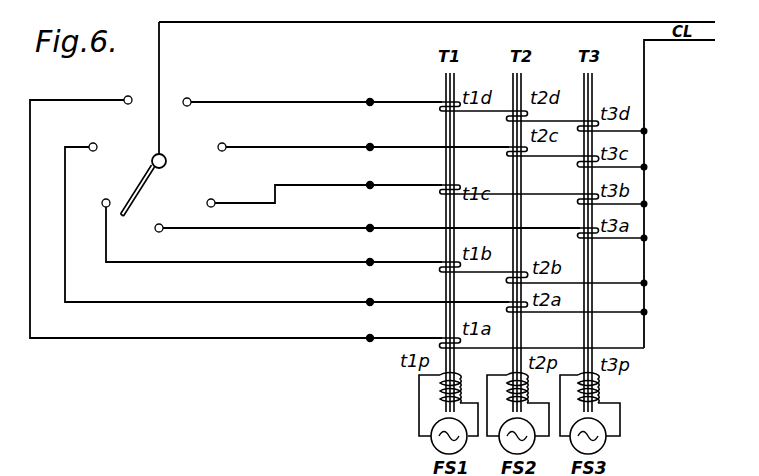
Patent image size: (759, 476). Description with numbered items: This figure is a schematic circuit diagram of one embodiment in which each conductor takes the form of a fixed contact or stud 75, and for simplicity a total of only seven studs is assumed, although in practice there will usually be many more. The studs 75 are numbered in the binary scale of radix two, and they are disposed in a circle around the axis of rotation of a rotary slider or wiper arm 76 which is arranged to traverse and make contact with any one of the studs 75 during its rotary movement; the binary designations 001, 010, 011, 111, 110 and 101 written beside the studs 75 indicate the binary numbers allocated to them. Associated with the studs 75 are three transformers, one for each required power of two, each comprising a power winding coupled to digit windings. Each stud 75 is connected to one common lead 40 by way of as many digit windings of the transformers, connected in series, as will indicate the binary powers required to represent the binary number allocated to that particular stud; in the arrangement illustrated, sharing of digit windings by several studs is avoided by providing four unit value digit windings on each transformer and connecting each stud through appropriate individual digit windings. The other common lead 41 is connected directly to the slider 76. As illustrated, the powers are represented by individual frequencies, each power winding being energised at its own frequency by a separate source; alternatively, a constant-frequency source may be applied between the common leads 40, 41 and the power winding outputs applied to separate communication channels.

The fixed contact or stud 75 is at (233, 177).
The rotary slider or wiper arm 76 is at (212, 167).
The switch position 001 conductor 001 is at (236, 221).
The switch position 010 conductor 010 is at (287, 226).
The switch position 011 conductor 011 is at (268, 224).
The switch position 111 conductor 111 is at (307, 110).
The switch position 110 conductor 110 is at (365, 184).
The switch position 101 conductor 101 is at (320, 193).
The common lead 40 is at (651, 41).
The common lead 41 is at (371, 23).